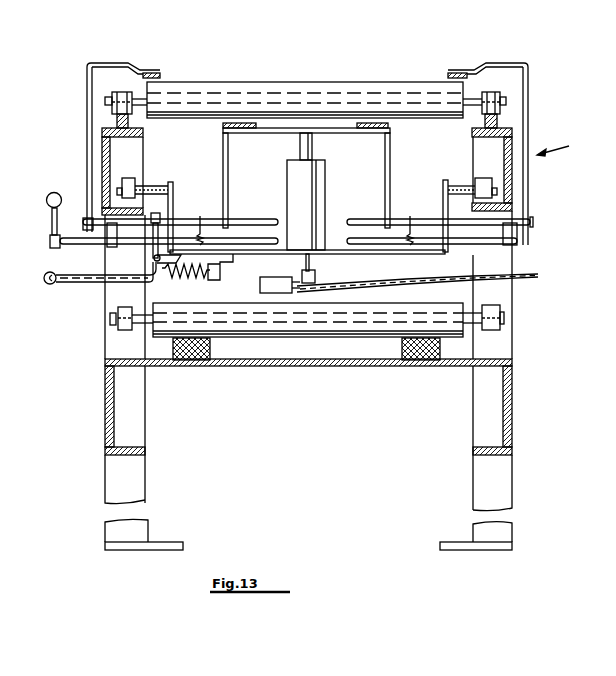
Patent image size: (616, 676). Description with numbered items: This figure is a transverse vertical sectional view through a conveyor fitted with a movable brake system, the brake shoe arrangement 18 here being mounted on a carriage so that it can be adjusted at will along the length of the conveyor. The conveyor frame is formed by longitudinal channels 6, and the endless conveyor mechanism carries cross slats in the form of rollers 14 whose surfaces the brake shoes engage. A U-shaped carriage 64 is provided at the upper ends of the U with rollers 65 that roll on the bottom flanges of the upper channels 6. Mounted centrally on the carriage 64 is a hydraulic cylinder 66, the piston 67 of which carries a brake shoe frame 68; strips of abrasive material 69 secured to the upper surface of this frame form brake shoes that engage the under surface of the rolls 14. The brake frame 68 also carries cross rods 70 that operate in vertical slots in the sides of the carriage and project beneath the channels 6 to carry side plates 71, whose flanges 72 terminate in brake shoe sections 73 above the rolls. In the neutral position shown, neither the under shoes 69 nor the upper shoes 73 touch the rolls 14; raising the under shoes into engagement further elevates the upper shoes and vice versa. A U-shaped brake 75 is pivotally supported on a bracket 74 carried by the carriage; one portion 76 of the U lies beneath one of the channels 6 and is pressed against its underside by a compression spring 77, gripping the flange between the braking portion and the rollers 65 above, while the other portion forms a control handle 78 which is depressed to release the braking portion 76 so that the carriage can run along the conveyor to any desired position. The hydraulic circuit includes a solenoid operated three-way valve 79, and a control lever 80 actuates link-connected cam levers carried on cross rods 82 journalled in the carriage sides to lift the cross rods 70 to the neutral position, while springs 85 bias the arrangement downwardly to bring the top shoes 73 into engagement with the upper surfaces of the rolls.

The longitudinal channel 6 is at (102, 152).
The roller 14 is at (317, 82).
The brake shoe arrangement 18 is at (300, 133).
The U-shaped carriage 64 is at (417, 254).
The roller 65 is at (127, 183).
The hydraulic cylinder 66 is at (313, 190).
The piston 67 is at (312, 148).
The brake shoe frame 68 is at (268, 134).
The strip of abrasive material 69 is at (238, 122).
The cross rod 70 is at (361, 219).
The side plate 71 is at (87, 113).
The flange 72 is at (113, 62).
The brake shoe section 73 is at (153, 69).
The bracket 74 is at (152, 261).
The U-shaped brake 75 is at (153, 249).
The braking portion 76 is at (143, 198).
The compression spring 77 is at (197, 277).
The control handle 78 is at (45, 279).
The solenoid operated three-way valve 79 is at (273, 289).
The control lever 80 is at (48, 219).
The cross rod 82 is at (358, 244).
The spring 85 is at (201, 230).